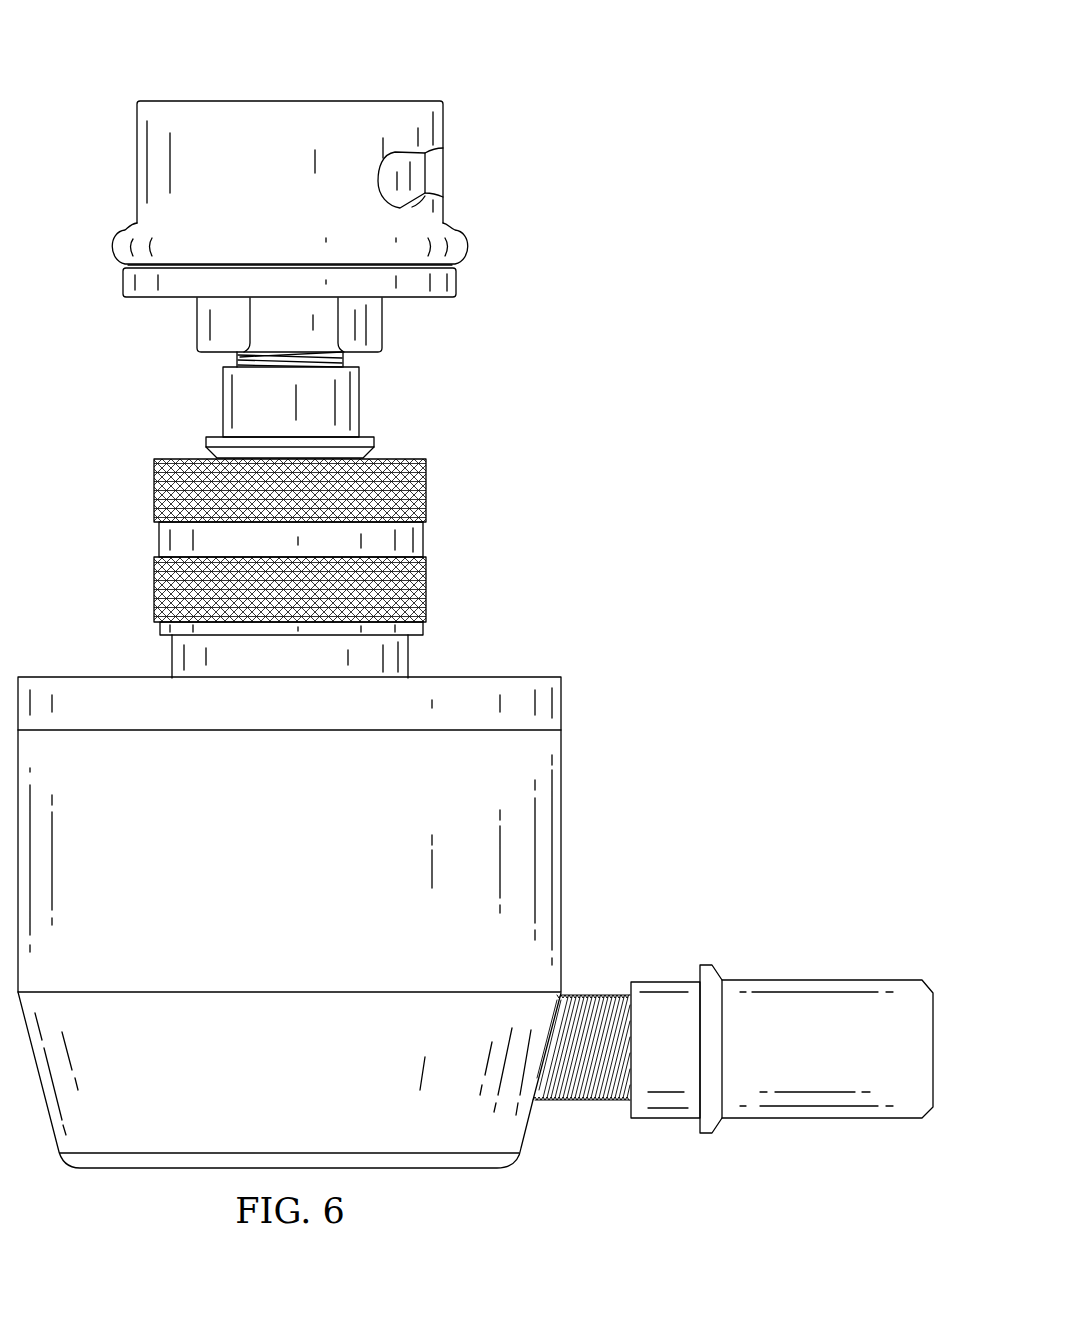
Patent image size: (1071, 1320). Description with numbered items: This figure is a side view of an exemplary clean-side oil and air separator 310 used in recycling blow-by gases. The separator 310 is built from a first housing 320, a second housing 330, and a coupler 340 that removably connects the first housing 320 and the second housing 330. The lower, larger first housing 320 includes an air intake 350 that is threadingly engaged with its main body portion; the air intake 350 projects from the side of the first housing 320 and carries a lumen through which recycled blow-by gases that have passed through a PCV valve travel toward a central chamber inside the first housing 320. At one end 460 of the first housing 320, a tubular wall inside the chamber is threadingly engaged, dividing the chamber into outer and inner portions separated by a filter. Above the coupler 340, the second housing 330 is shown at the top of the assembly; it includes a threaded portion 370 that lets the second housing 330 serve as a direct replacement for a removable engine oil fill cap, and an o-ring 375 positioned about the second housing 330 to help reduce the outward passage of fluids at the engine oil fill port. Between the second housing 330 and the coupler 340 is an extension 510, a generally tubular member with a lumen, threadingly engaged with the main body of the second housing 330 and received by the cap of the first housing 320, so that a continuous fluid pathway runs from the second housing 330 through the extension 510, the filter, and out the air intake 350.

The clean-side oil and air separator 310 is at (660, 62).
The second housing 330 is at (137, 160).
The threaded portion 370 is at (427, 173).
The o-ring 375 is at (463, 246).
The extension 510 is at (223, 407).
The coupler 340 is at (433, 460).
The first housing 320 is at (561, 860).
The one end of first housing 460 is at (466, 1170).
The air intake 350 is at (813, 1118).